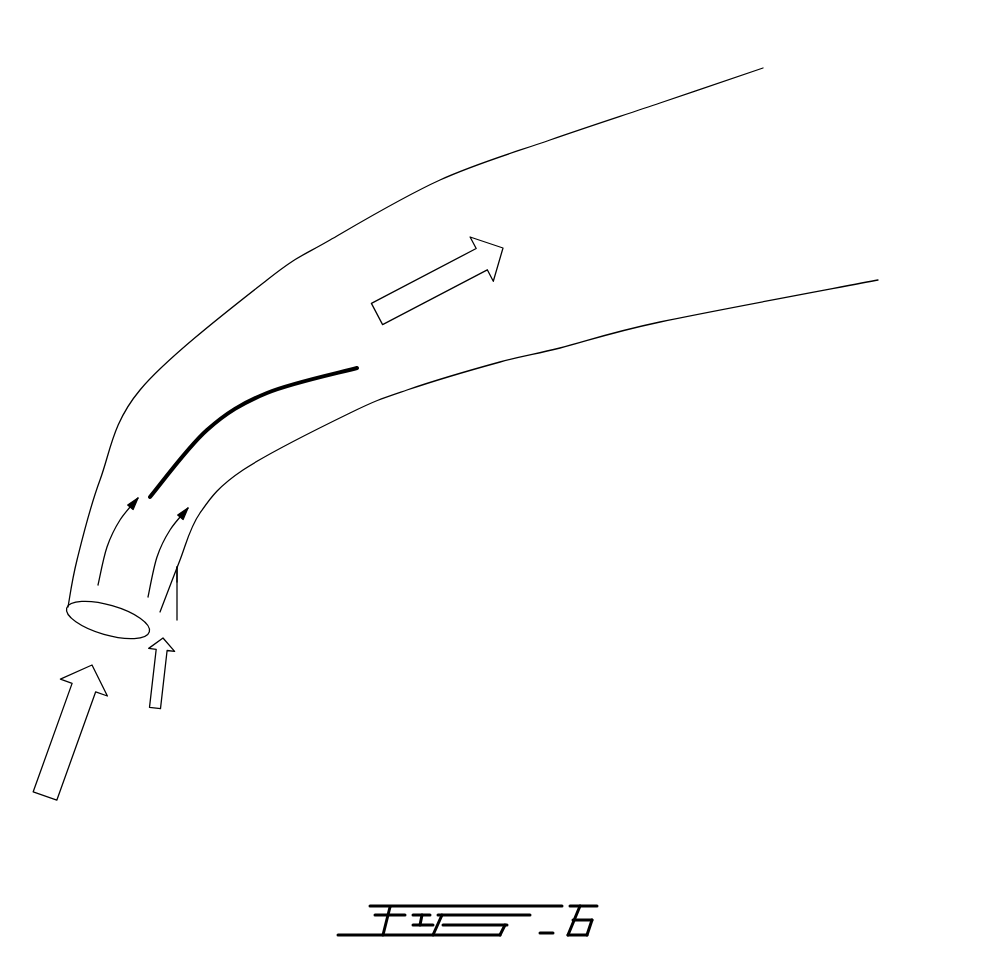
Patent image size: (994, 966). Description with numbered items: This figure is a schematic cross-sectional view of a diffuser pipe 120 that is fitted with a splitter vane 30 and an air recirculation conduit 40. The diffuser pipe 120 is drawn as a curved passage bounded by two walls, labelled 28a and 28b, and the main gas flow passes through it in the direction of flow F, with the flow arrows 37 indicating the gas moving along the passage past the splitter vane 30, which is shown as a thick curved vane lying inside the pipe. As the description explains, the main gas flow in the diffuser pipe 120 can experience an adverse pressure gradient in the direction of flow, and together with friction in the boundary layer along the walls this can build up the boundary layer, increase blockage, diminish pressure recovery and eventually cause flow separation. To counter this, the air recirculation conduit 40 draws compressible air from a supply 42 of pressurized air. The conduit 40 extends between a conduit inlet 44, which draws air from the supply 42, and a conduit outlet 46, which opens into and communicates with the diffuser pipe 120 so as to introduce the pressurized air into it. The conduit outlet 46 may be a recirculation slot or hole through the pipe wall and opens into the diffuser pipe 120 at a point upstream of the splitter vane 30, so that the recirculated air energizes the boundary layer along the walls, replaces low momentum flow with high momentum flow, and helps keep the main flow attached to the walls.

The diffuser pipe 120 is at (473, 411).
The inner duct wall 28a is at (243, 473).
The outer duct wall 28b is at (140, 388).
The splitter vane 30 is at (280, 405).
The heated airflow 37 is at (347, 392).
The air recirculation conduit 40 is at (192, 603).
The supply of pressurized air 42 is at (905, 162).
The conduit inlet 44 is at (167, 617).
The conduit outlet 46 is at (177, 580).